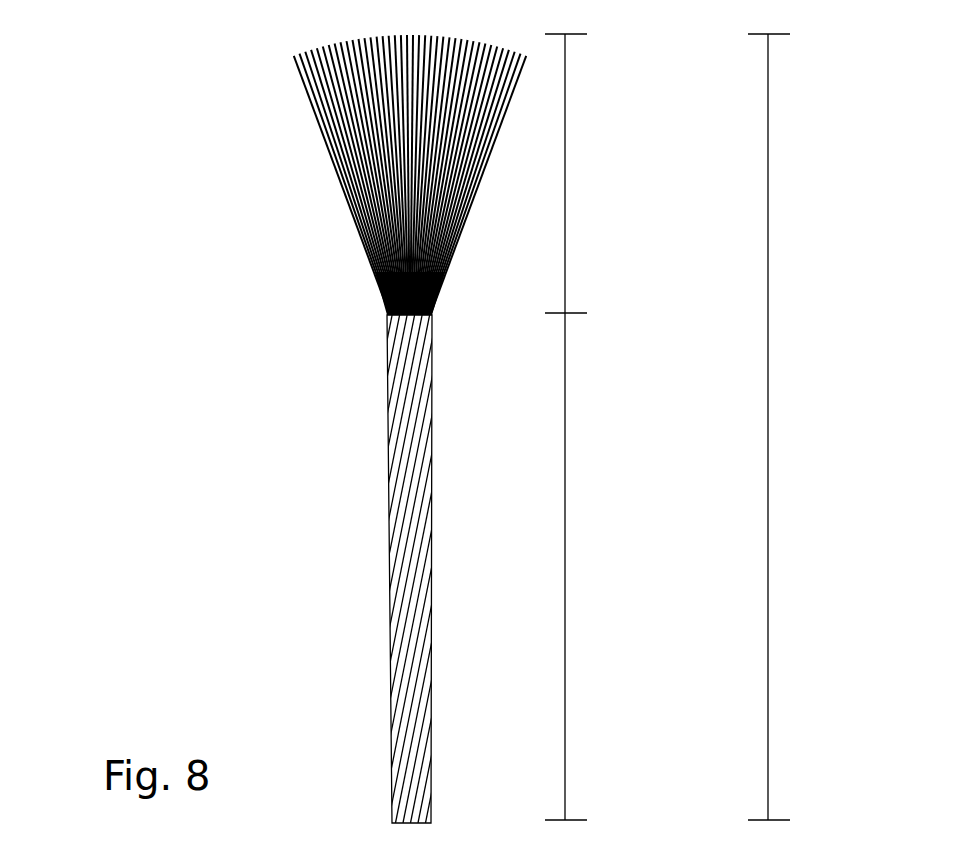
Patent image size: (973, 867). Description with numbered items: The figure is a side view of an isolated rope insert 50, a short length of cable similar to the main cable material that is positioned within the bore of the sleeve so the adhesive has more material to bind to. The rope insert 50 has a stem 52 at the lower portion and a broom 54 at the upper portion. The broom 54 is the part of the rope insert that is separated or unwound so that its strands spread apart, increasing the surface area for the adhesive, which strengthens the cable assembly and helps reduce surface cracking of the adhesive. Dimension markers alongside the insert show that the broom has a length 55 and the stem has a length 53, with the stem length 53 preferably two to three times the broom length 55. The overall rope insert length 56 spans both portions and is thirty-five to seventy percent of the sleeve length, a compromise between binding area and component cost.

The rope insert 50 is at (332, 667).
The stem 52 is at (363, 498).
The broom 54 is at (305, 187).
The broom length 55 is at (603, 174).
The stem length 53 is at (603, 568).
The rope insert length 56 is at (806, 428).